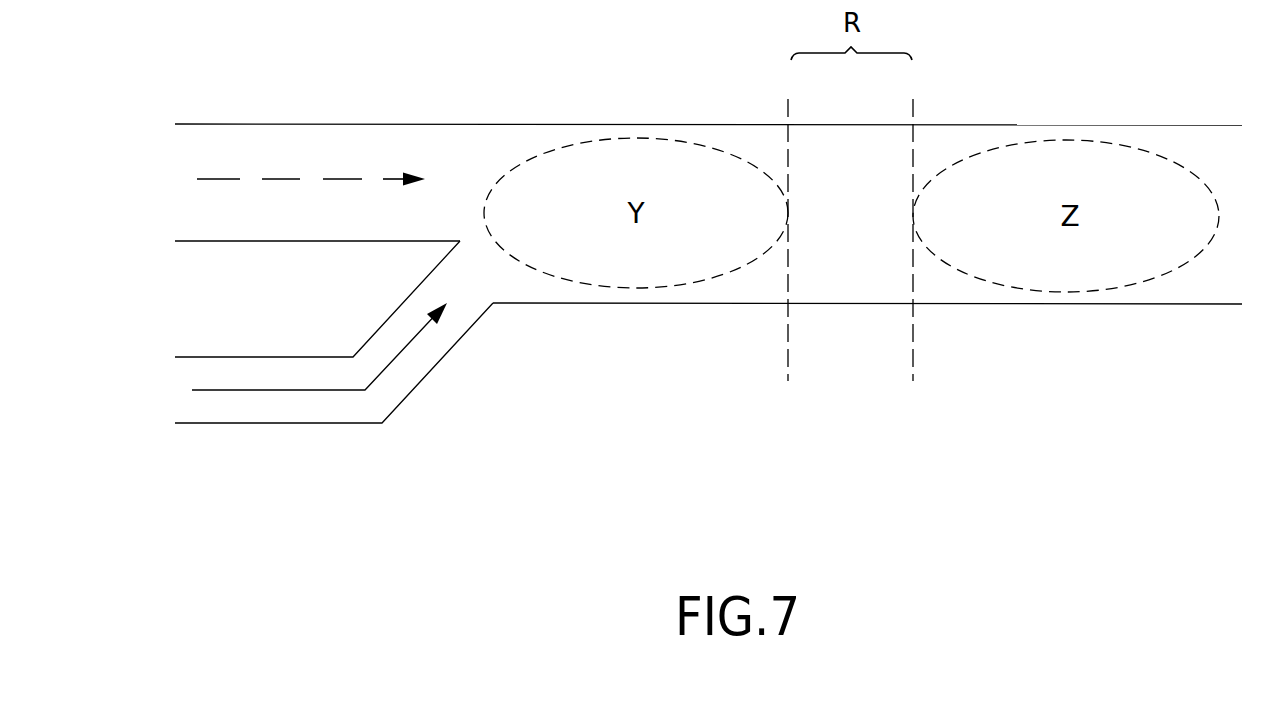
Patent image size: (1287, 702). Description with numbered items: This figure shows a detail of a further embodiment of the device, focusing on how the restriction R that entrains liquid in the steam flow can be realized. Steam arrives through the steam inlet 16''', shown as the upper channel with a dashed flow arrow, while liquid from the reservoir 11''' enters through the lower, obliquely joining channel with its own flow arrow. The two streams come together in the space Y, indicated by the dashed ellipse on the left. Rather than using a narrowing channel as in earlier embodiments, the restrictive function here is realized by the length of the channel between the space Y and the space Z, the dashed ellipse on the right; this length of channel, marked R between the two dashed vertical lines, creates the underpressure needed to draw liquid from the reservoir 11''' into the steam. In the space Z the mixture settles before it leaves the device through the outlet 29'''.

The steam inlet 16''' is at (686, 153).
The reservoir 11''' is at (316, 368).
The outlet 29''' is at (887, 335).